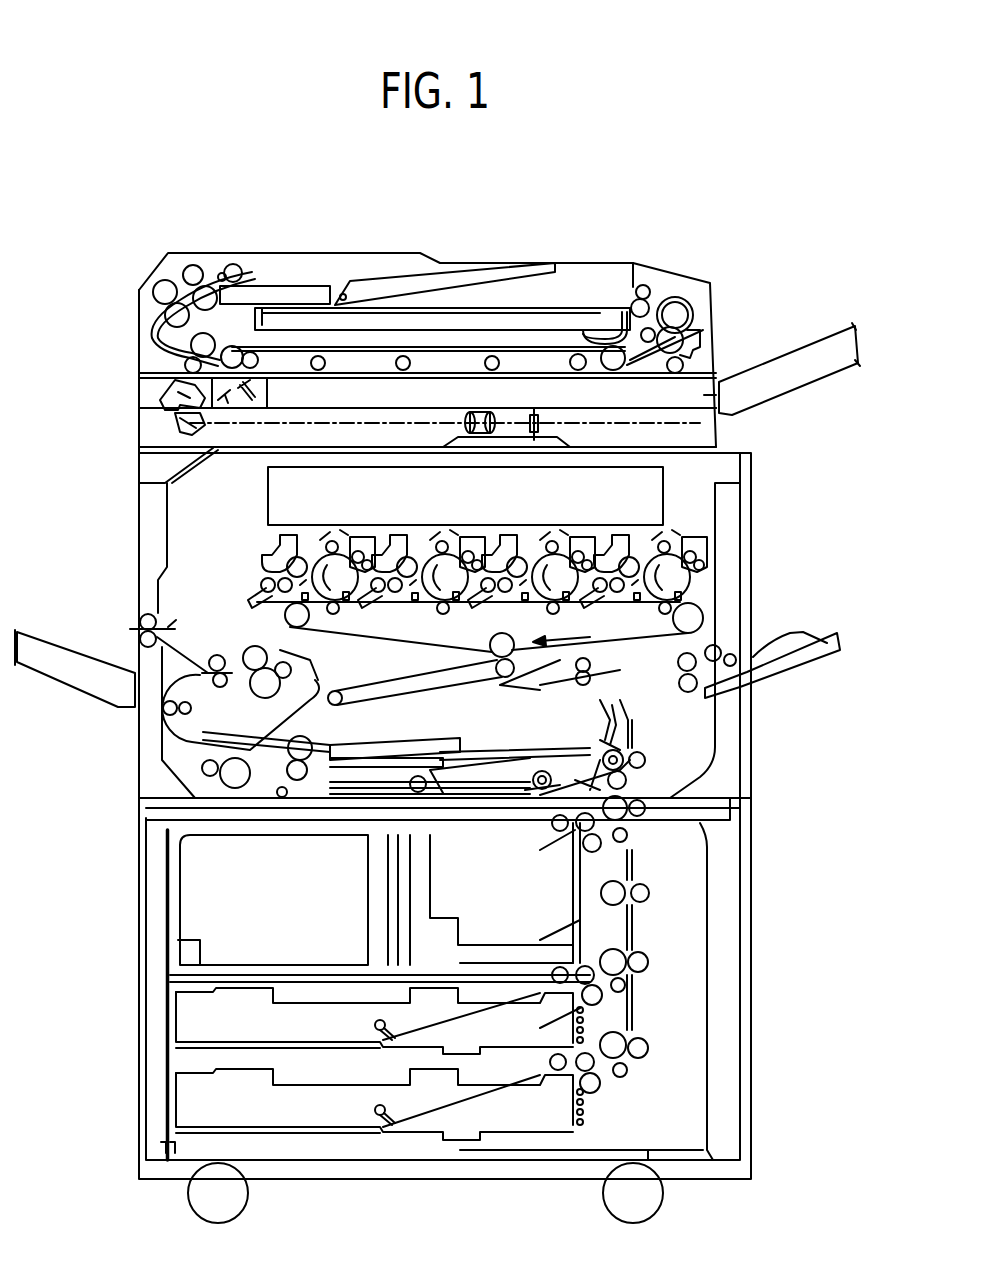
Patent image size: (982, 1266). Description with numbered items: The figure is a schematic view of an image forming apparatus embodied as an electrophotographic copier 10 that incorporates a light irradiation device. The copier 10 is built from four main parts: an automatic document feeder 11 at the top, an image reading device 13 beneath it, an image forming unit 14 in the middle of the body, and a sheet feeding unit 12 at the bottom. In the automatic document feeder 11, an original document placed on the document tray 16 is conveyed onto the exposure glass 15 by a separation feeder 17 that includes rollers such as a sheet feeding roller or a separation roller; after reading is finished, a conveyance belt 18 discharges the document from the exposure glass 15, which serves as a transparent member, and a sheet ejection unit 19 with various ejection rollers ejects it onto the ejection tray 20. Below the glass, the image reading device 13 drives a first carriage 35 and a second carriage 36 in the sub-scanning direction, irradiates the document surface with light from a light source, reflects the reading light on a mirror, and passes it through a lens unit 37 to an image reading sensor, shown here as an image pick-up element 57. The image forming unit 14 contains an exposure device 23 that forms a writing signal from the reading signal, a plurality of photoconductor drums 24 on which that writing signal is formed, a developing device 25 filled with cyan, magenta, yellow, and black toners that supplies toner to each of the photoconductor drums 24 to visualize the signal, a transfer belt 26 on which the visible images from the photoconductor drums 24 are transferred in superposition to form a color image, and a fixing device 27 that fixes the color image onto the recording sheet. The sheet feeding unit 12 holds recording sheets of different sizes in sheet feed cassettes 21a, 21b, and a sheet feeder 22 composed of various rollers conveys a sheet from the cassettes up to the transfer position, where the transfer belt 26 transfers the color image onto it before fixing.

The copier 10 is at (451, 246).
The automatic document feeder 11 is at (120, 313).
The sheet feeding unit 12 is at (116, 983).
The image reading device 13 is at (120, 402).
The image forming unit 14 is at (130, 713).
The exposure glass 15 is at (440, 358).
The document tray 16 is at (400, 286).
The separation feeder 17 is at (172, 276).
The conveyance belt 18 is at (510, 347).
The sheet ejection unit 19 is at (700, 323).
The ejection tray 20 is at (565, 324).
The sheet feed cassette 21a is at (300, 1047).
The sheet feed cassette 21b is at (398, 1135).
The sheet feeder 22 is at (645, 939).
The exposure device 23 is at (262, 500).
The photoconductor drum 24 is at (358, 590).
The developing device 25 is at (362, 535).
The transfer belt 26 is at (422, 652).
The fixing device 27 is at (242, 643).
The first carriage 35 is at (270, 393).
The second carriage 36 is at (167, 415).
The lens unit 37 is at (485, 405).
The image pick-up element 57 is at (540, 423).